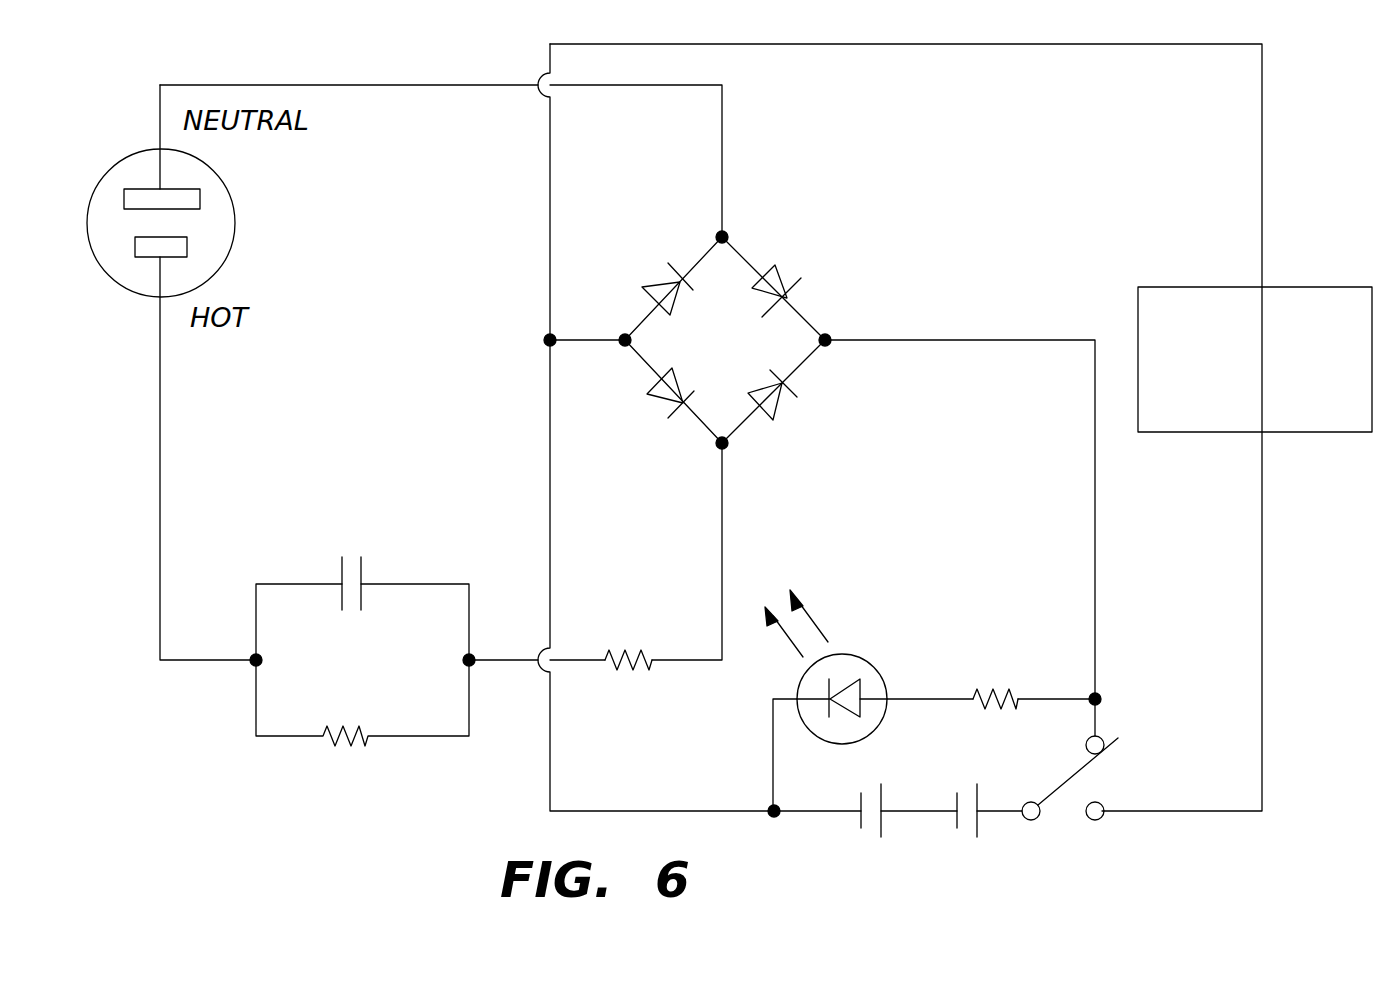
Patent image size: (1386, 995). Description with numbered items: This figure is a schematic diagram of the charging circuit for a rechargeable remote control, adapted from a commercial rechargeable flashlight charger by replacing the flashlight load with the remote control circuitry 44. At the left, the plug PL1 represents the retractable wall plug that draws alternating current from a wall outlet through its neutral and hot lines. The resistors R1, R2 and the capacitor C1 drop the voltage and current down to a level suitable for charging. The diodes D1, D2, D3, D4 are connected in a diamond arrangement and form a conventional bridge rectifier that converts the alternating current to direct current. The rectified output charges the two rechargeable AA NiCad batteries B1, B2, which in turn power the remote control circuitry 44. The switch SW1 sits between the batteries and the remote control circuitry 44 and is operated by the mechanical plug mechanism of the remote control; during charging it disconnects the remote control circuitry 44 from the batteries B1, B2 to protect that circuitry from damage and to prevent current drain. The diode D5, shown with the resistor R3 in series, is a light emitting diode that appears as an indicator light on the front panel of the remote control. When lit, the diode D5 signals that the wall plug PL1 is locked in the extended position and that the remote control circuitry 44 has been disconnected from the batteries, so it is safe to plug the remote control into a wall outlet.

The plug PL1 is at (201, 223).
The capacitor C1 is at (362, 584).
The resistor R1 is at (362, 703).
The resistor R2 is at (628, 635).
The resistor R3 is at (995, 672).
The diode D1 is at (667, 391).
The diode D2 is at (784, 391).
The diode D3 is at (794, 281).
The diode D4 is at (664, 284).
The diode D5 is at (831, 667).
The battery B1 is at (863, 831).
The battery B2 is at (963, 831).
The switch SW1 is at (1090, 792).
The remote control circuitry 44 is at (1194, 287).